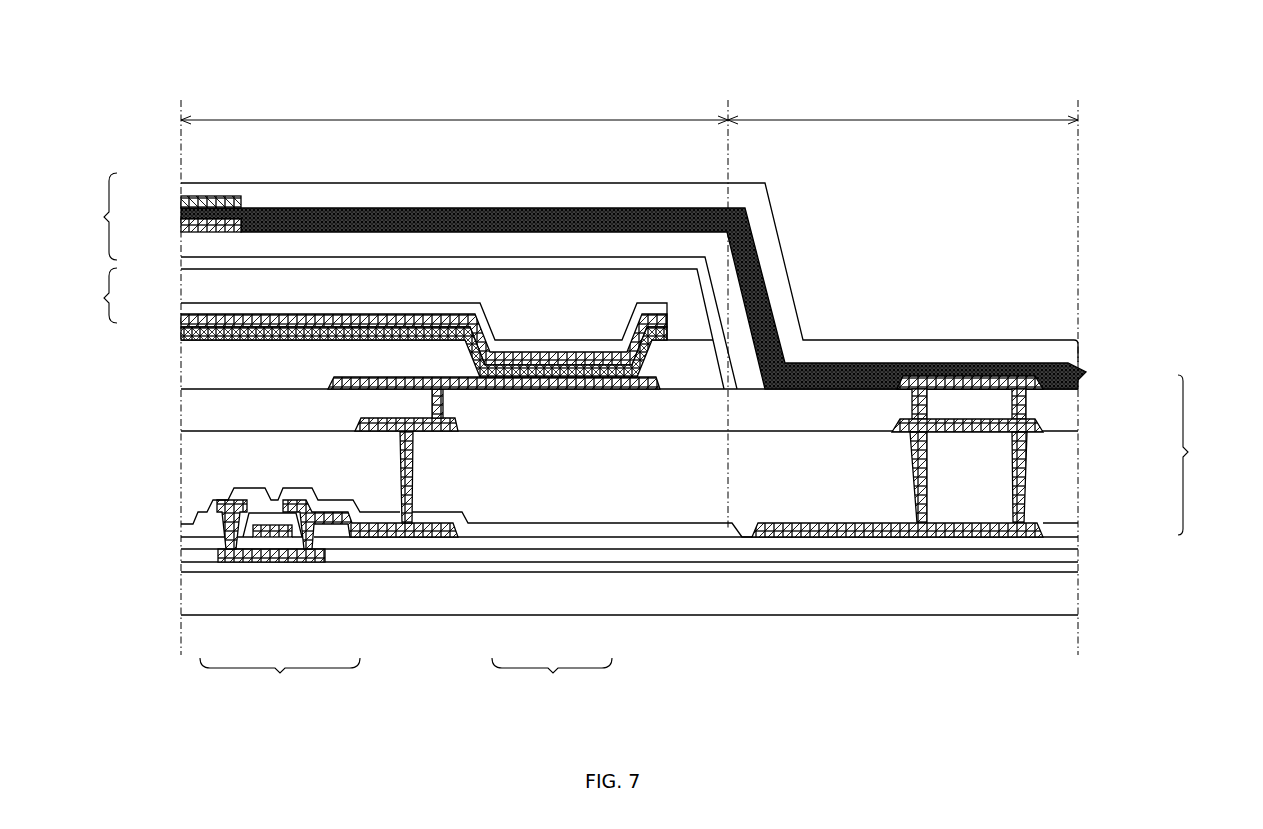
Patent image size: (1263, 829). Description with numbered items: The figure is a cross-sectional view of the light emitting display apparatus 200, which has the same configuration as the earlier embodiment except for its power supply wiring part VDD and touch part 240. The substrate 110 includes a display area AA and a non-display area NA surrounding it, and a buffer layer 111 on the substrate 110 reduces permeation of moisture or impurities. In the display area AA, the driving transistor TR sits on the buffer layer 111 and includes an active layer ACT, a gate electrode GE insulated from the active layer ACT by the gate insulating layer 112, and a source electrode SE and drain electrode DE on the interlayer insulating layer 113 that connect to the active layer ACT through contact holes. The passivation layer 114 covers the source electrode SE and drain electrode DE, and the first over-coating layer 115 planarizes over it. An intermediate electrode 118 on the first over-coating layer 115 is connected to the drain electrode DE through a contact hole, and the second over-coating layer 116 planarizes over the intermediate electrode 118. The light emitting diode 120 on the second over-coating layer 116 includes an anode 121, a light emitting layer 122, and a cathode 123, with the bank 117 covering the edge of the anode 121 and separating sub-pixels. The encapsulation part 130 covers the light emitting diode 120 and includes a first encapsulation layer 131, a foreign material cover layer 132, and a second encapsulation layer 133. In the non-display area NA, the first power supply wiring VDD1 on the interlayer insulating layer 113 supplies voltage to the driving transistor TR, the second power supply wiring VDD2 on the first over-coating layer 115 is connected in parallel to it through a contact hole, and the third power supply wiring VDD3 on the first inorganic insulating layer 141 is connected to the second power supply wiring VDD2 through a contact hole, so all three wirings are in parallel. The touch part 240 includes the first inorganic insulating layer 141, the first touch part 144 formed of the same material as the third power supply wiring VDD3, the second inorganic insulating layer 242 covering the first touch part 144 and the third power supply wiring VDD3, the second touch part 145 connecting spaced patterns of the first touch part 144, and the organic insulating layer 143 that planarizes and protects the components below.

The light emitting display apparatus 200 is at (1060, 56).
The substrate 110 is at (190, 604).
The buffer layer 111 is at (190, 567).
The gate insulating layer 112 is at (190, 552).
The interlayer insulating layer 113 is at (190, 538).
The passivation layer 114 is at (190, 525).
The first over-coating layer 115 is at (190, 478).
The second over-coating layer 116 is at (188, 413).
The bank 117 is at (188, 365).
The intermediate electrode 118 is at (398, 460).
The light emitting diode 120 is at (552, 677).
The anode 121 is at (508, 378).
The light emitting layer 122 is at (552, 378).
The cathode 123 is at (603, 378).
The encapsulation part 130 is at (91, 295).
The first encapsulation layer 131 is at (188, 318).
The foreign material cover layer 132 is at (190, 287).
The second encapsulation layer 133 is at (188, 264).
The first inorganic insulating layer 141 is at (188, 246).
The second inorganic insulating layer 242 is at (185, 213).
The first touch part 144 is at (186, 226).
The second touch part 145 is at (185, 202).
The organic insulating layer 143 is at (183, 183).
The touch part 240 is at (91, 216).
The driving transistor TR is at (280, 677).
The active layer ACT is at (257, 552).
The gate electrode GE is at (281, 537).
The source electrode SE is at (232, 550).
The drain electrode DE is at (310, 540).
The power supply wiring part VDD is at (1207, 455).
The first power supply wiring VDD1 is at (1040, 528).
The second power supply wiring VDD2 is at (1040, 426).
The third power supply wiring VDD3 is at (1043, 381).
The display area AA is at (454, 110).
The non-display area NA is at (903, 110).